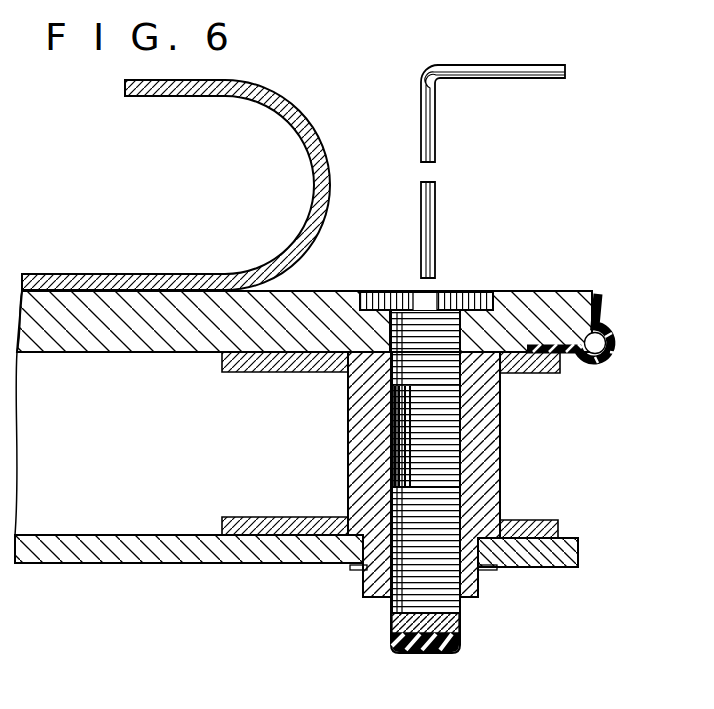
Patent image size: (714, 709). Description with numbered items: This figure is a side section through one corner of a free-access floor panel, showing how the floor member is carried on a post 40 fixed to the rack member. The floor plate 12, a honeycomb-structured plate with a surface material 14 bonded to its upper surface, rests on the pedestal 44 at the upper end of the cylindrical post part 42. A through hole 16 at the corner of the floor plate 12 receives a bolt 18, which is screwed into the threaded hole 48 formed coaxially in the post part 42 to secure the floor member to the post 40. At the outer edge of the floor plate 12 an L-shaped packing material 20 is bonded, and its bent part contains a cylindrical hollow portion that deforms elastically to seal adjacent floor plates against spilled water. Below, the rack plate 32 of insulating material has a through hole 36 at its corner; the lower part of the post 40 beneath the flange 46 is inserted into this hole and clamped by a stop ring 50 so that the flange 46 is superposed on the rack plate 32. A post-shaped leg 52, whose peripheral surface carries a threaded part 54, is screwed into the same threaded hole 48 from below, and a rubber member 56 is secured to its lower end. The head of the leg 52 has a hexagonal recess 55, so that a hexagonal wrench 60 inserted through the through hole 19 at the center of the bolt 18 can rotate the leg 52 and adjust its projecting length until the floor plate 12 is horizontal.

The floor plate 12 is at (65, 346).
The surface material 14 is at (120, 275).
The through hole 16 is at (393, 292).
The bolt 18 is at (487, 292).
The through hole 19 is at (426, 304).
The packing material 20 is at (608, 304).
The rack plate 32 is at (70, 545).
The through hole 36 is at (347, 507).
The post 40 is at (517, 455).
The cylindrical post part 42 is at (355, 413).
The pedestal 44 is at (222, 358).
The flange 46 is at (252, 517).
The threaded hole 48 is at (458, 413).
The stop ring 50 is at (492, 568).
The leg 52 is at (452, 633).
The threaded part 54 is at (390, 604).
The hexagonal recess 55 is at (452, 487).
The rubber member 56 is at (440, 654).
The hexagonal wrench 60 is at (437, 122).